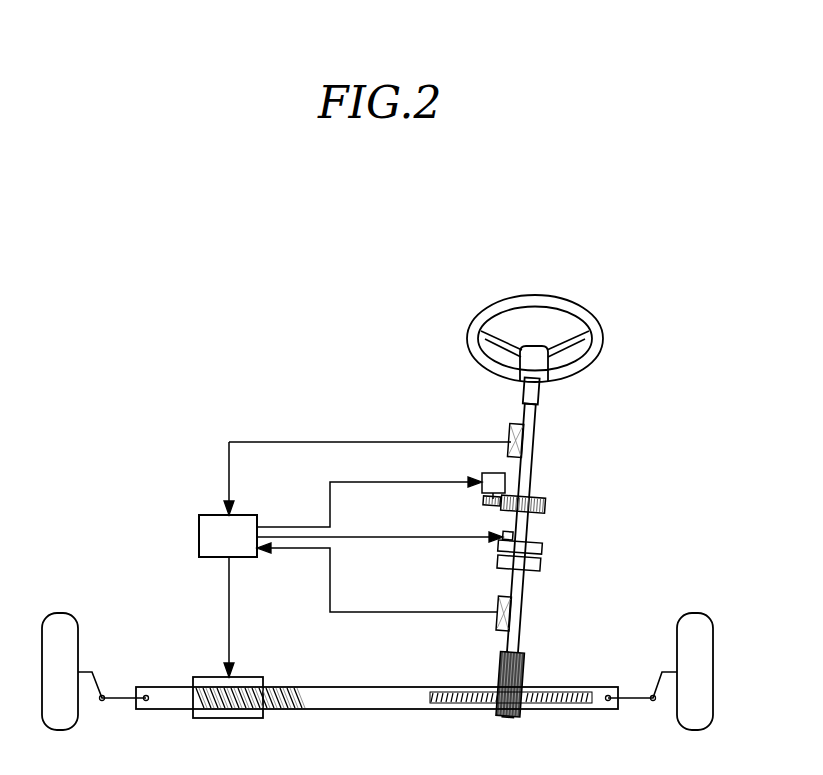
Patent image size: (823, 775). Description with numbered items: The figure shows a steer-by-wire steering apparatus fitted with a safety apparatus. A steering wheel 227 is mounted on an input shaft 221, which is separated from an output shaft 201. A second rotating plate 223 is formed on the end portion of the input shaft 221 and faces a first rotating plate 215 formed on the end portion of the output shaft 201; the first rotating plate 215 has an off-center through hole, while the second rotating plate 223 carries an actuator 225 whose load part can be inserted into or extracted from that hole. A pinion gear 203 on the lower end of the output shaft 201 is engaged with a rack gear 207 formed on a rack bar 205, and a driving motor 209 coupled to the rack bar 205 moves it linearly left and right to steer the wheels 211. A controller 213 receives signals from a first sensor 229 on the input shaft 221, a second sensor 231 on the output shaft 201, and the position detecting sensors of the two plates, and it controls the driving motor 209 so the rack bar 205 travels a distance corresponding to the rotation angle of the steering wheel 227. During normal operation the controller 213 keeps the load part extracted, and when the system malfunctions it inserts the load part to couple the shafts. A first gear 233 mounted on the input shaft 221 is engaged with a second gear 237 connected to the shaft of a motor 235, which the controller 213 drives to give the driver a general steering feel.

The output shaft 201 is at (524, 616).
The pinion gear 203 is at (523, 673).
The rack bar 205 is at (371, 710).
The rack gear 207 is at (558, 709).
The driving motor 209 is at (222, 718).
The wheels 211 is at (76, 631).
The controller 213 is at (198, 540).
The first rotating plate 215 is at (541, 566).
The input shaft 221 is at (538, 448).
The second rotating plate 223 is at (543, 549).
The actuator 225 is at (518, 539).
The steering wheel 227 is at (604, 340).
The first sensor 229 is at (511, 432).
The second sensor 231 is at (497, 606).
The first gear 233 is at (546, 504).
The motor 235 is at (481, 476).
The second gear 237 is at (483, 507).